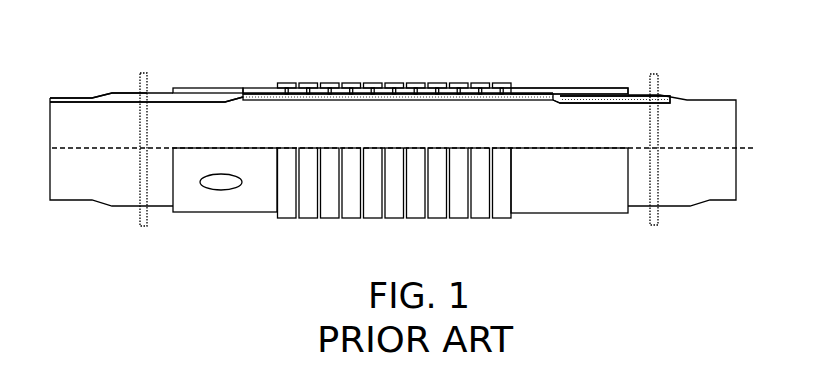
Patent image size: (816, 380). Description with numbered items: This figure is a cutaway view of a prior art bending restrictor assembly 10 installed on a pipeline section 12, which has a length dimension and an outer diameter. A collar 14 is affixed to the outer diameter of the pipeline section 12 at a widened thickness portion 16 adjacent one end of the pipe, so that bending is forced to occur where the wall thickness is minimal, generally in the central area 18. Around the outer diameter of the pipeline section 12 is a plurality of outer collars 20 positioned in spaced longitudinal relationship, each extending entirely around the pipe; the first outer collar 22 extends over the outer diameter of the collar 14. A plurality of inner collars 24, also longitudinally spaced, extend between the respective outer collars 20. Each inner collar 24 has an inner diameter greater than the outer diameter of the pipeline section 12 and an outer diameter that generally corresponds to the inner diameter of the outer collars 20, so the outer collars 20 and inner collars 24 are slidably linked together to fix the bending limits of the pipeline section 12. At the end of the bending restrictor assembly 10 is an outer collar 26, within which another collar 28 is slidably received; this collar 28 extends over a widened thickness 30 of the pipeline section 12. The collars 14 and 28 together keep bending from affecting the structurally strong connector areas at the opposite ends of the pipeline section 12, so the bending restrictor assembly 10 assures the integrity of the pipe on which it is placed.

The bending restrictor assembly 10 is at (428, 50).
The pipeline section 12 is at (157, 93).
The collar 14 is at (212, 88).
The widened thickness portion 16 is at (203, 103).
The central area 18 is at (423, 100).
The outer collars 20 is at (348, 83).
The first outer collar 22 is at (288, 83).
The inner collars 24 is at (298, 95).
The outer collar 26 is at (503, 83).
The collar 28 is at (557, 90).
The widened thickness 30 is at (587, 103).